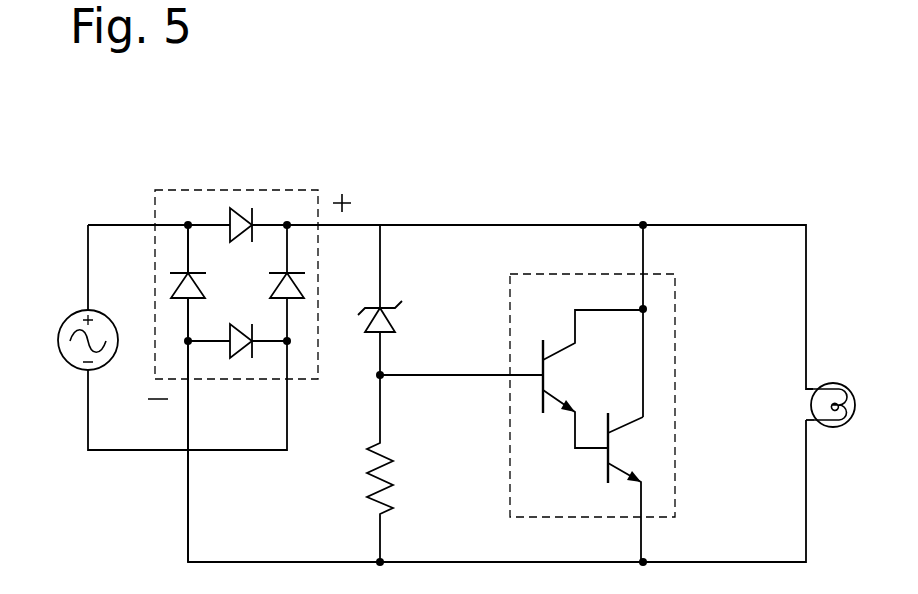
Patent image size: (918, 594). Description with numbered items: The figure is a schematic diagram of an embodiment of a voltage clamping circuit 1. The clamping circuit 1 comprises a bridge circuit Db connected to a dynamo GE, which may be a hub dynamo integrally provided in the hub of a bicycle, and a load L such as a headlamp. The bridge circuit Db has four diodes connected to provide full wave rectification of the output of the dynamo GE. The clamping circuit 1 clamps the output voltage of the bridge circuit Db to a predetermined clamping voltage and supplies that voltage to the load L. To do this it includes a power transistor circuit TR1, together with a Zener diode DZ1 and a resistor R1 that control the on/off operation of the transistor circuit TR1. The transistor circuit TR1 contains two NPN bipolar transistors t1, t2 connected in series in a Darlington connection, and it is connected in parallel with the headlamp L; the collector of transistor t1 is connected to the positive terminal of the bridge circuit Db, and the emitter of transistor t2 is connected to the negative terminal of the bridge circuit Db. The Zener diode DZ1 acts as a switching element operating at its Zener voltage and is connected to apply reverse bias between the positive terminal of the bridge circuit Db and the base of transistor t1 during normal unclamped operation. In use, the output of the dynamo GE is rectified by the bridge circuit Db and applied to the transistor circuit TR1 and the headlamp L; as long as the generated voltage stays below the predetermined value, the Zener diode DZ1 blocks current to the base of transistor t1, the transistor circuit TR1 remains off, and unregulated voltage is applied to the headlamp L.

The voltage clamping circuit 1 is at (562, 186).
The bridge circuit Db is at (203, 352).
The dynamo GE is at (71, 362).
The Zener diode DZ1 is at (416, 302).
The resistor R1 is at (409, 468).
The power transistor circuit TR1 is at (527, 393).
The transistor t1 is at (589, 374).
The transistor t2 is at (622, 467).
The load L is at (842, 423).